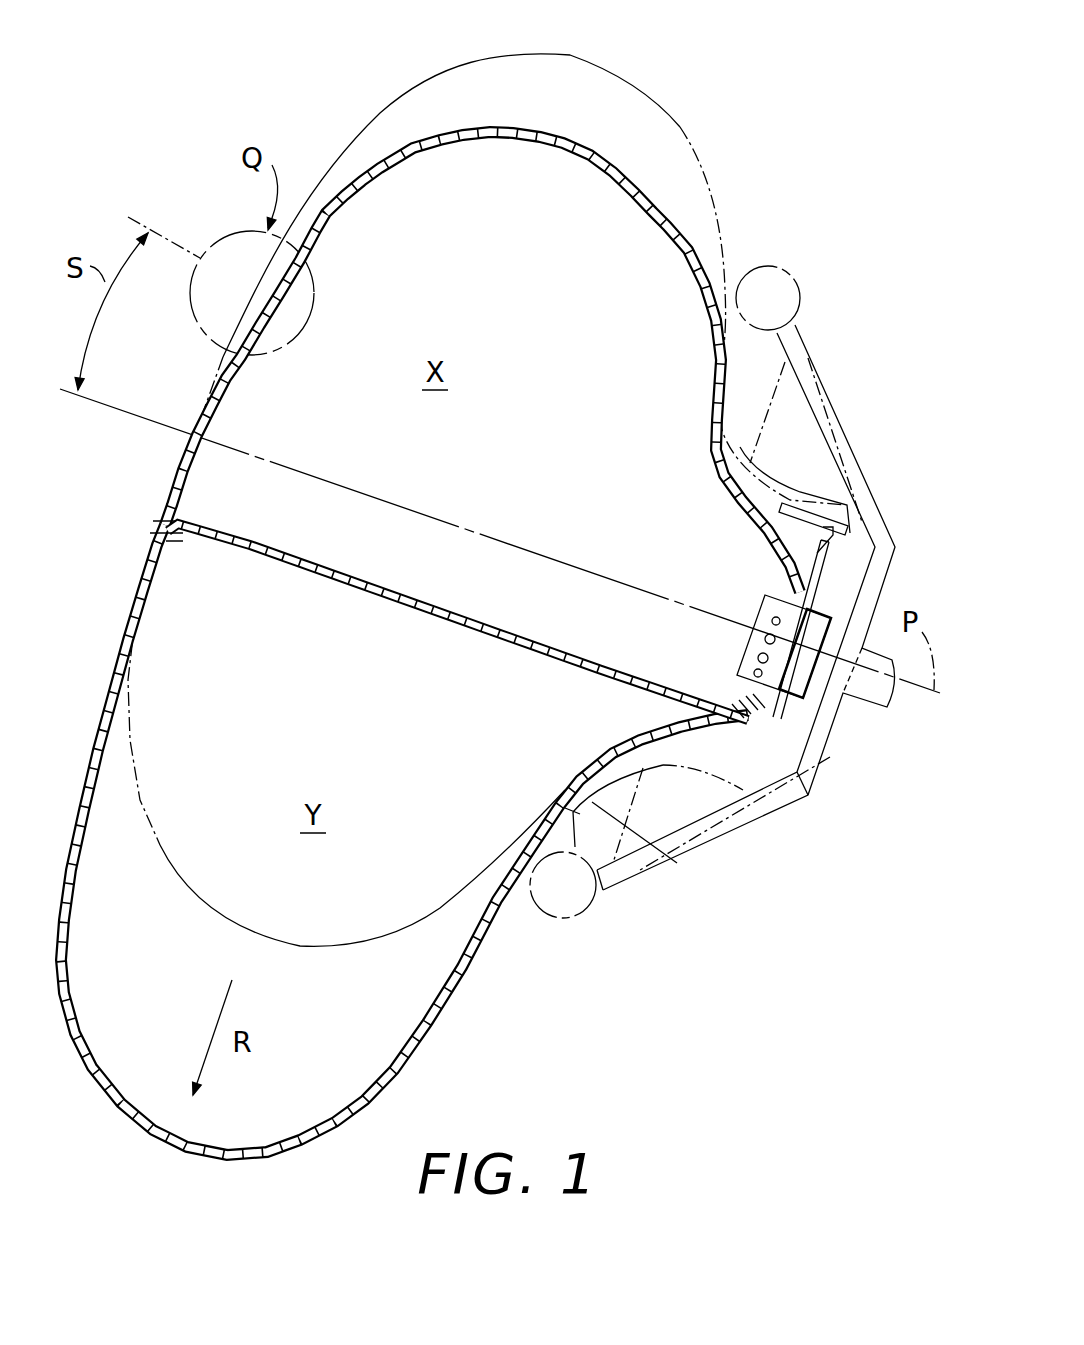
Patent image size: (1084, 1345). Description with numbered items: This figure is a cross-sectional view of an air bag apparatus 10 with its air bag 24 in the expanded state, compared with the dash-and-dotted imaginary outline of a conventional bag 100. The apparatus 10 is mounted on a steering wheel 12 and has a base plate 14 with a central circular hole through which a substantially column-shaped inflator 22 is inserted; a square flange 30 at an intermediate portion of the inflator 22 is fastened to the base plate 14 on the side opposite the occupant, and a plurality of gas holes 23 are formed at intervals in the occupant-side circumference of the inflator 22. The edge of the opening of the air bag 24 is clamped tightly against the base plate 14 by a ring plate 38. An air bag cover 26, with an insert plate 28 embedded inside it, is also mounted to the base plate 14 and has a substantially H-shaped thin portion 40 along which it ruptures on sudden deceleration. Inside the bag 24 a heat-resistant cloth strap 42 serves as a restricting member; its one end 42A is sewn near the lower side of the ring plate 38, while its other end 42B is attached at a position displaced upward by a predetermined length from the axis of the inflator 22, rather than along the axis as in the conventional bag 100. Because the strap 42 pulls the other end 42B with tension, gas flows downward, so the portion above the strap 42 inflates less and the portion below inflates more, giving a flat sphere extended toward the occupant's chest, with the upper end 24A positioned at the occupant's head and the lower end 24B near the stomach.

The conventional bag 100 is at (673, 108).
The air bag apparatus 10 is at (790, 447).
The steering wheel 12 is at (812, 358).
The base plate 14 is at (812, 777).
The inflator 22 is at (825, 690).
The gas holes 23 is at (767, 625).
The air bag 24 is at (430, 646).
The upper end of the air bag 24A is at (573, 146).
The lower end of the air bag 24B is at (175, 1150).
The air bag cover 26 is at (677, 863).
The insert plate 28 is at (740, 815).
The flange 30 is at (823, 605).
The ring plate 38 is at (797, 594).
The thin portion 40 is at (585, 890).
The strap 42 is at (382, 600).
The one end of the strap 42A is at (746, 706).
The other end of the strap 42B is at (180, 556).